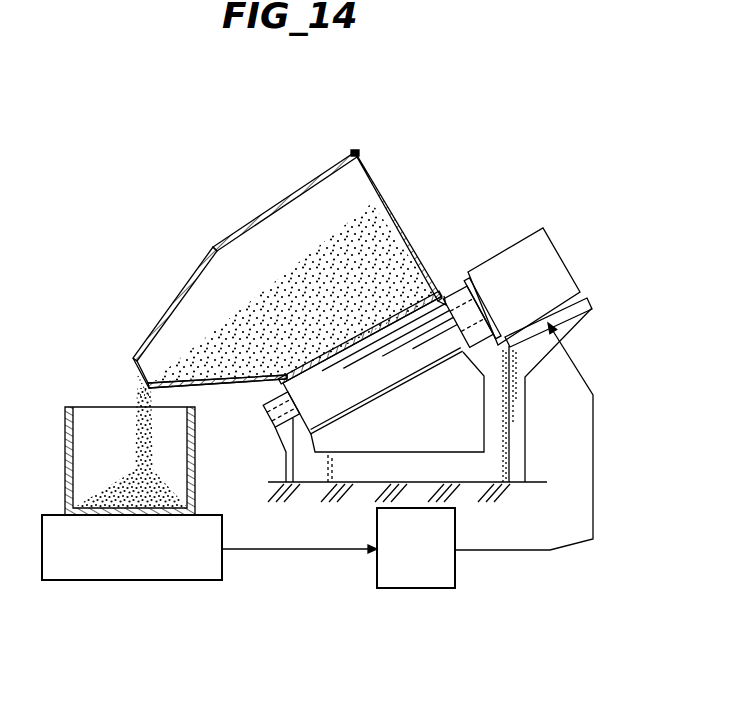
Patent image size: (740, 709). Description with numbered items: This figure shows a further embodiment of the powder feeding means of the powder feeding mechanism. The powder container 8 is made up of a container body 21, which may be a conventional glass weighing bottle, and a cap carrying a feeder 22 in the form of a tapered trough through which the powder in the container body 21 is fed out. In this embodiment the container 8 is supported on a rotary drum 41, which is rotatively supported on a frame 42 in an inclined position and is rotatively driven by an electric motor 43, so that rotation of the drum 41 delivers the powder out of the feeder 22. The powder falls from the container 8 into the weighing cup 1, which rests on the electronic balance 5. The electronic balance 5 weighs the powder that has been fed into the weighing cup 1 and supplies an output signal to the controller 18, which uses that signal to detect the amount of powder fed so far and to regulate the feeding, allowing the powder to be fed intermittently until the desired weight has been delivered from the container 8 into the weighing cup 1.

The weighing cup 1 is at (65, 450).
The electronic balance 5 is at (115, 581).
The powder container 8 is at (272, 208).
The controller 18 is at (403, 589).
The container body 21 is at (375, 176).
The feeder 22 is at (163, 310).
The rotary drum 41 is at (390, 370).
The frame 42 is at (452, 292).
The electric motor 43 is at (562, 261).